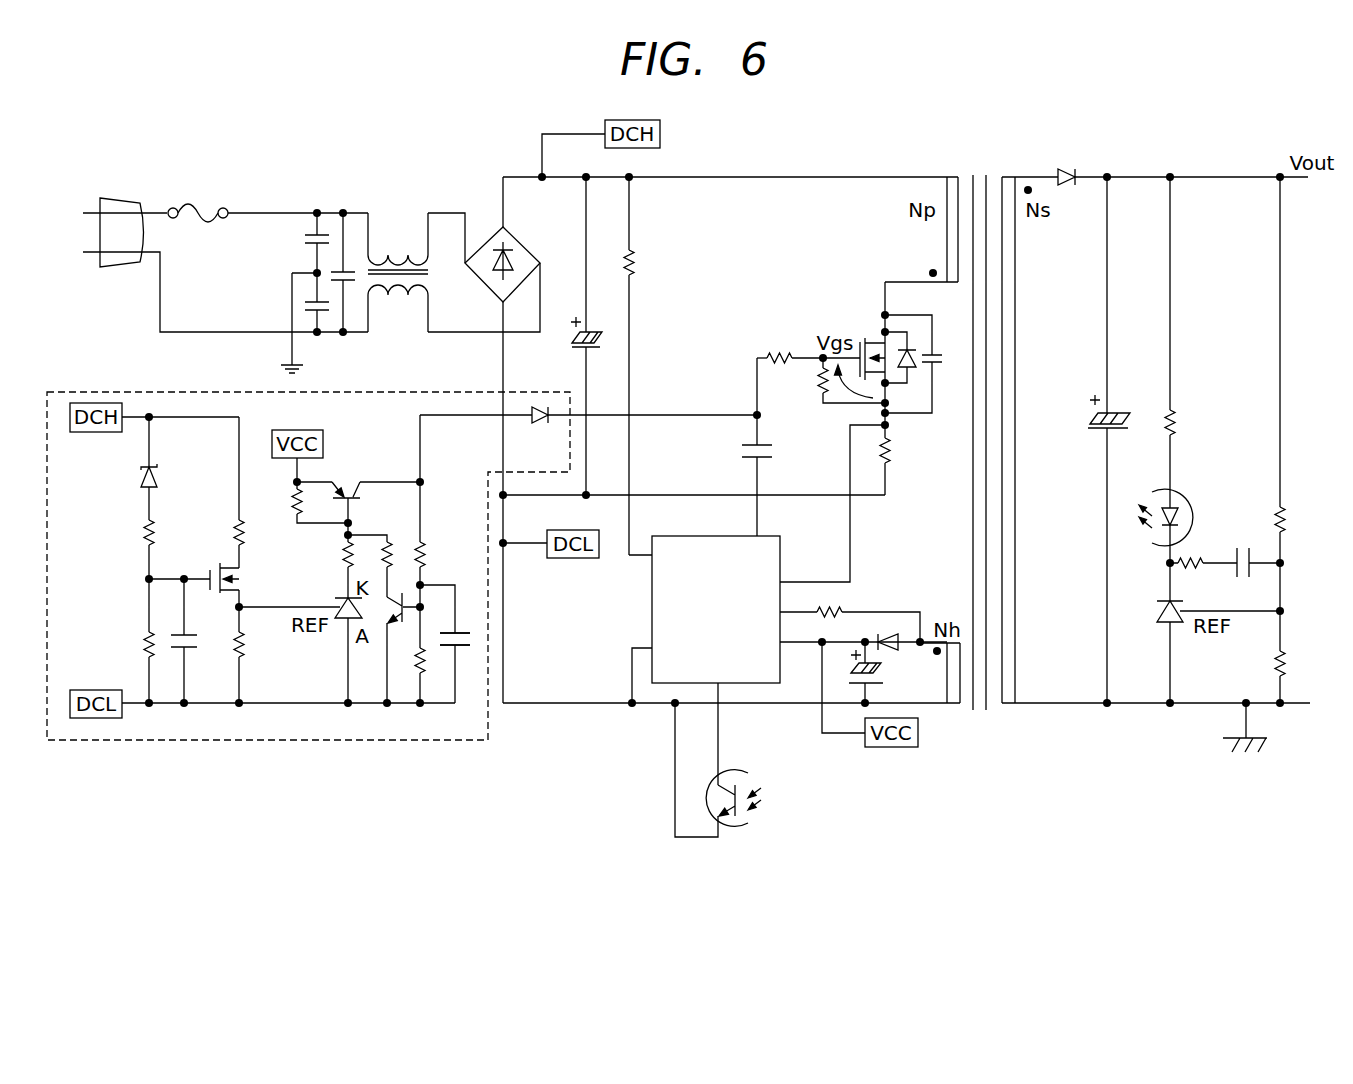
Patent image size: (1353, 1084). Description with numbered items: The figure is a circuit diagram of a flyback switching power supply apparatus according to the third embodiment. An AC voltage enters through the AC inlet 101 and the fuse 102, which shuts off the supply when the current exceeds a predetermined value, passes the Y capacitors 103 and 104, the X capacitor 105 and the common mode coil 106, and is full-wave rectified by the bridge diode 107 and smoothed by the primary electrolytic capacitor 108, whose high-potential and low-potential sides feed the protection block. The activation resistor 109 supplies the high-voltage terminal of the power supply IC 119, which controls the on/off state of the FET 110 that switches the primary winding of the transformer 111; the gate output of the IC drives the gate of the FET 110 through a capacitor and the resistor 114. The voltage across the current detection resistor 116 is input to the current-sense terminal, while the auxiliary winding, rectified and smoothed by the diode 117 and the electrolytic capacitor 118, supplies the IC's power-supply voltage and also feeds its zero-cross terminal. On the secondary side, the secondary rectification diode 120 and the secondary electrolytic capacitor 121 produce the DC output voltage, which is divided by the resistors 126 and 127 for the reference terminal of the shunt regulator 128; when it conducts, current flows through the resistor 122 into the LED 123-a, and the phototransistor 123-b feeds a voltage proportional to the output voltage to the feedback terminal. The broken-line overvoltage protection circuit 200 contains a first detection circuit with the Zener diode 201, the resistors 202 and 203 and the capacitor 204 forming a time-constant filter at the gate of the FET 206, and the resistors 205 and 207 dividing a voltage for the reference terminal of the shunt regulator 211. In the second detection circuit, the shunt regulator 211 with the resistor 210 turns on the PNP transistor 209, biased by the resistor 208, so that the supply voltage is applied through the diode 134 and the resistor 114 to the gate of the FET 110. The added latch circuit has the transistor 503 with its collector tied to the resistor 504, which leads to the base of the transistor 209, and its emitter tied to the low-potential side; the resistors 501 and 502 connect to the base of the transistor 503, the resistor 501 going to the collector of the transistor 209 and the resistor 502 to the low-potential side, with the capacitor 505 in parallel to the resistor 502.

The AC inlet 101 is at (118, 197).
The fuse 102 is at (200, 207).
The capacitor 103 is at (305, 240).
The capacitor 104 is at (305, 308).
The capacitor 105 is at (351, 265).
The common mode coil 106 is at (400, 240).
The bridge diode 107 is at (523, 246).
The primary electrolytic capacitor 108 is at (571, 341).
The activation resistor 109 is at (636, 263).
The FET 110 is at (866, 338).
The transformer 111 is at (975, 172).
The resistor 114 is at (776, 351).
The current detection resistor 116 is at (892, 452).
The diode 117 is at (881, 634).
The electrolytic capacitor 118 is at (887, 678).
The power supply IC 119 is at (652, 605).
The secondary rectification diode 120 is at (1070, 167).
The secondary electrolytic capacitor 121 is at (1086, 416).
The resistor 122 is at (1182, 426).
The LED of photocoupler 123-a is at (1187, 494).
The phototransistor of photocoupler 123-b is at (745, 773).
The resistor 126 is at (1288, 521).
The resistor 127 is at (1288, 664).
The shunt regulator 128 is at (1165, 627).
The diode 134 is at (543, 424).
The overvoltage protection circuit 200 is at (271, 742).
The Zener diode 201 is at (141, 479).
The resistor 202 is at (143, 532).
The resistor 203 is at (143, 644).
The capacitor 204 is at (190, 650).
The resistor 205 is at (233, 531).
The FET 206 is at (241, 578).
The resistor 207 is at (246, 660).
The resistor 208 is at (292, 494).
The PNP transistor 209 is at (341, 481).
The resistor 210 is at (343, 556).
The shunt regulator 211 is at (341, 624).
The resistor 501 is at (426, 546).
The resistor 502 is at (414, 674).
The transistor 503 is at (385, 612).
The resistor 504 is at (393, 544).
The capacitor 505 is at (462, 652).